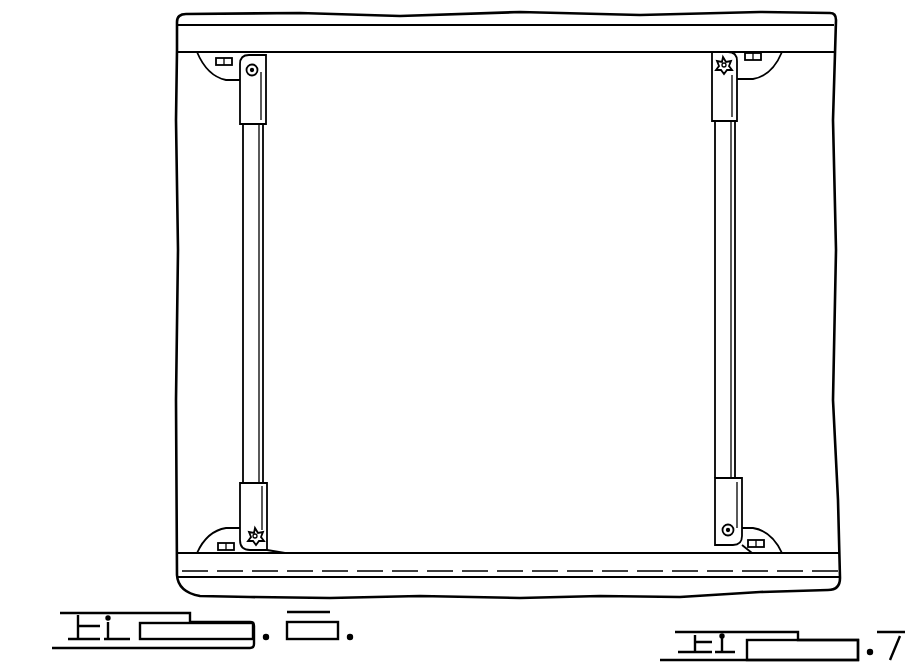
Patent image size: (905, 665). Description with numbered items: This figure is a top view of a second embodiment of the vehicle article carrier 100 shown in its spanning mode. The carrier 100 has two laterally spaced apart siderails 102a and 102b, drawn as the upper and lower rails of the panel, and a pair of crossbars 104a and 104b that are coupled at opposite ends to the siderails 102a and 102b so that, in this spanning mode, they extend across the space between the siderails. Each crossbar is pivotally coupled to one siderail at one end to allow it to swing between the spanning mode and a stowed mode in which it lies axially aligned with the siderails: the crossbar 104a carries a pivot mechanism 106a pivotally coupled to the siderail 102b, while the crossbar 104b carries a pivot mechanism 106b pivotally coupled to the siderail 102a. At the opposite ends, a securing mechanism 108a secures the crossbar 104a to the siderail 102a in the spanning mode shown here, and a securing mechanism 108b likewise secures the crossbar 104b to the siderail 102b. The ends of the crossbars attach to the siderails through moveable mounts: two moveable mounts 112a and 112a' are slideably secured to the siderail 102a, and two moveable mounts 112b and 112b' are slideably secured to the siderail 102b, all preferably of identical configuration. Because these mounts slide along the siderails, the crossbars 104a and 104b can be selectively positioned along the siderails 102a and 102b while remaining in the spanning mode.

The vehicle article carrier 100 is at (138, 67).
The siderail 102a is at (468, 42).
The siderail 102b is at (427, 557).
The crossbar 104a is at (722, 258).
The crossbar 104b is at (255, 293).
The pivot mechanism 106a is at (723, 530).
The pivot mechanism 106b is at (247, 107).
The securing mechanism 108a is at (713, 65).
The securing mechanism 108b is at (262, 533).
The moveable mount 112a is at (158, 84).
The moveable mount 112b is at (170, 521).
The moveable mount 112a' is at (777, 104).
The moveable mount 112b' is at (785, 500).